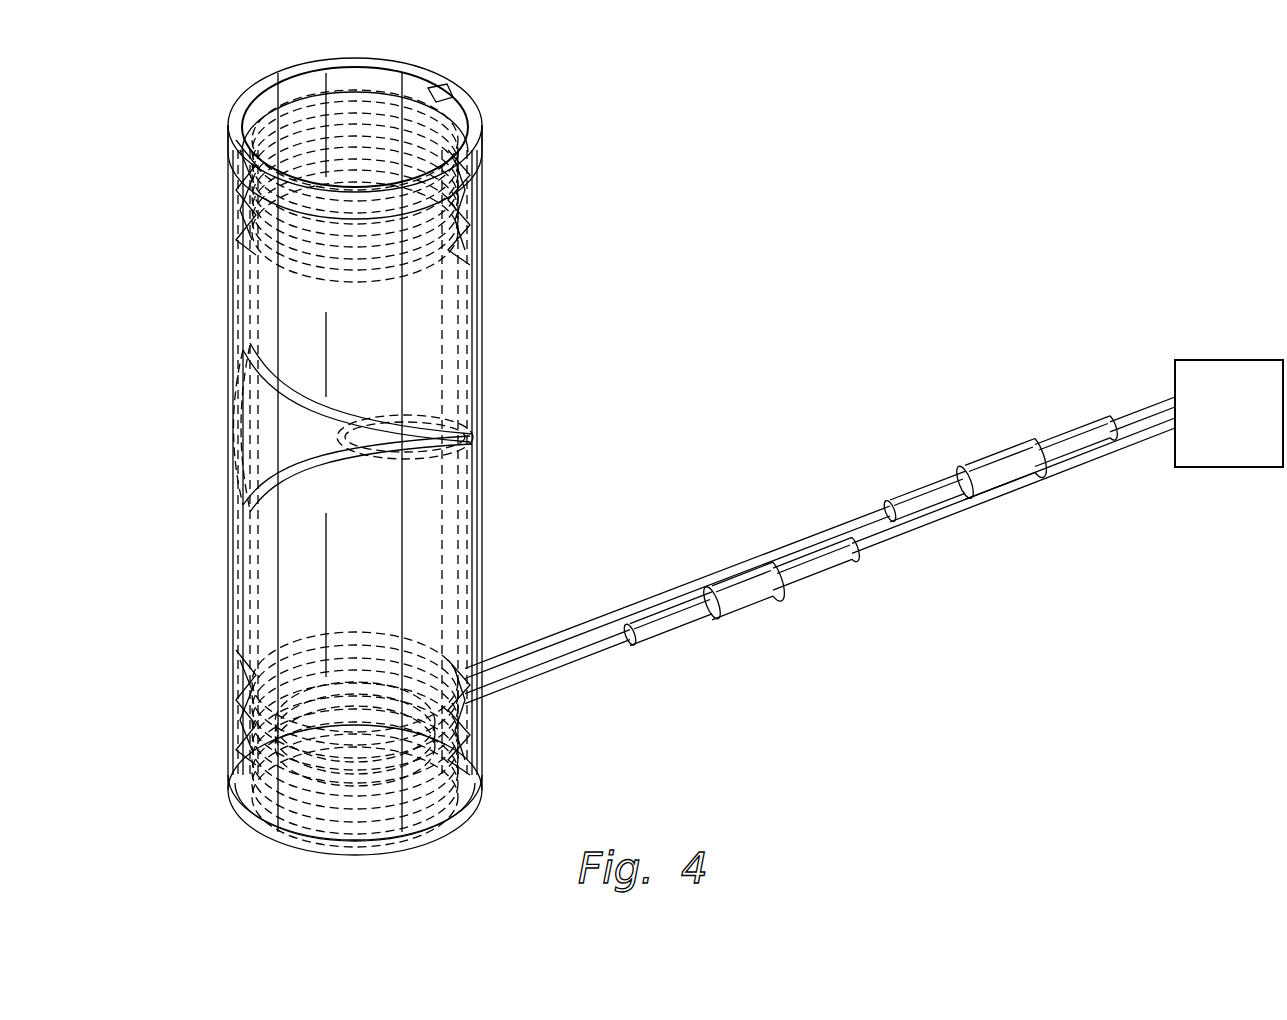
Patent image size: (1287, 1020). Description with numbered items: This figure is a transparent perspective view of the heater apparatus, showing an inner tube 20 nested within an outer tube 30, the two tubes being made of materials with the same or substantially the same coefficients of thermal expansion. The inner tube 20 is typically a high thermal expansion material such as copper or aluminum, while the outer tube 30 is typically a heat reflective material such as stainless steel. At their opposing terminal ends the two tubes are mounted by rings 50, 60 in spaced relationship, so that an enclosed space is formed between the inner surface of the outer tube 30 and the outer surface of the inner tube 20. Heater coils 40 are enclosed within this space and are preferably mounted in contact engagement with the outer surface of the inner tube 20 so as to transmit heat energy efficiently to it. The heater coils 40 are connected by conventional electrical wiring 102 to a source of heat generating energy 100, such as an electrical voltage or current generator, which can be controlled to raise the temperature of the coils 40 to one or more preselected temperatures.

The inner tube 20 is at (458, 317).
The outer tube 30 is at (478, 352).
The heater coils 40 is at (425, 276).
The ring 50 is at (422, 75).
The ring 60 is at (392, 850).
The source of heat generating energy 100 is at (1246, 421).
The electrical wiring 102 is at (823, 530).